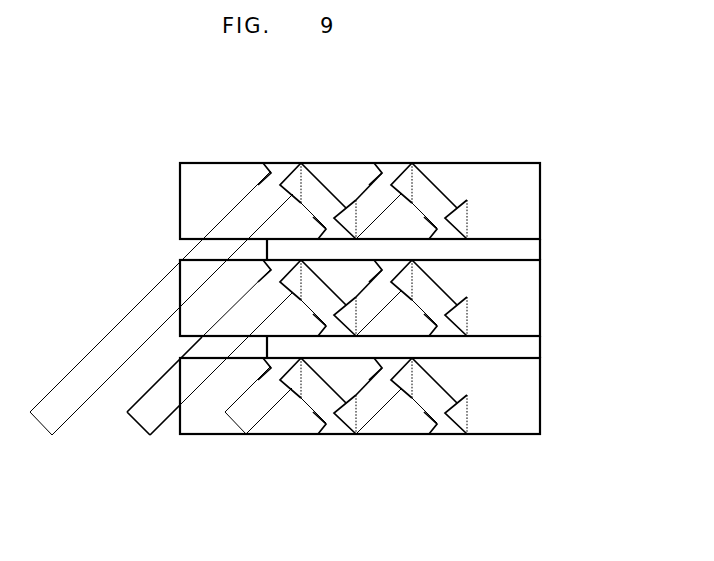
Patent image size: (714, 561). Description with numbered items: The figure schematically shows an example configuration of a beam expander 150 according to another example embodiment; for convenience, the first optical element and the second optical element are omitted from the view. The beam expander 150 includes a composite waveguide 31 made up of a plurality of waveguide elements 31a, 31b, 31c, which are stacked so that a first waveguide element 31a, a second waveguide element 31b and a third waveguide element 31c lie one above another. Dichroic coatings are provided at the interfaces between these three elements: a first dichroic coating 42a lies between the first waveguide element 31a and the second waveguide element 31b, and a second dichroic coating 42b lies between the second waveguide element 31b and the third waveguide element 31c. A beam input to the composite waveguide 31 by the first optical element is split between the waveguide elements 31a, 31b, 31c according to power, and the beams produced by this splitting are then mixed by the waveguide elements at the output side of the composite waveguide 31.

The beam expander 150 is at (586, 140).
The composite waveguide 31 is at (623, 202).
The first waveguide element 31a is at (532, 398).
The second waveguide element 31b is at (532, 298).
The third waveguide element 31c is at (532, 203).
The first dichroic coating 42a is at (495, 350).
The second dichroic coating 42b is at (494, 247).